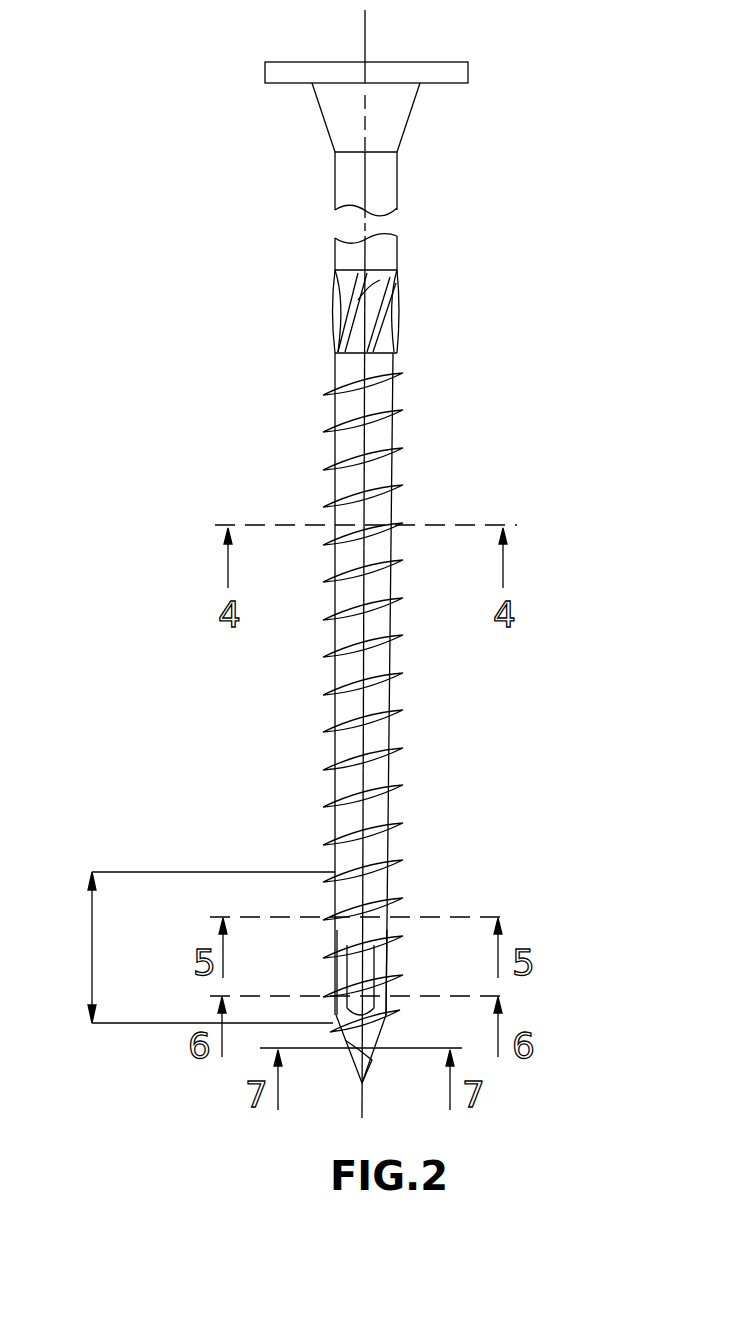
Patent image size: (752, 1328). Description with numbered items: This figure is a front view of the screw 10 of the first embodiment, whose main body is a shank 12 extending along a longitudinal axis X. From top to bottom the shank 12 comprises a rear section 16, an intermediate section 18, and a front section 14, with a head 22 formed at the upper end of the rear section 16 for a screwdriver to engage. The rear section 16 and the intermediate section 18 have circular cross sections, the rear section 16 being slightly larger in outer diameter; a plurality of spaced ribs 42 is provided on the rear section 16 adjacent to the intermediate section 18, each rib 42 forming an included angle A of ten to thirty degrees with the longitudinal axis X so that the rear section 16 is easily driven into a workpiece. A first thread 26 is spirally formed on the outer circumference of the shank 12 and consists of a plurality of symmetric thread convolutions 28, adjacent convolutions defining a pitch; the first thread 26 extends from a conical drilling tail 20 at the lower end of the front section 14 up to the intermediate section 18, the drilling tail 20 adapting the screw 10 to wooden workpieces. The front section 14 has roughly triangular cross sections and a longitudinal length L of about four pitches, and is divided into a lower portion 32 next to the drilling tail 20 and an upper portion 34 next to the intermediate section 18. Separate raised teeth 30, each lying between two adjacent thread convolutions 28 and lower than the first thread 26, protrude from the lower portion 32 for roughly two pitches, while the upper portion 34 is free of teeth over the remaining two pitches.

The screw 10 is at (212, 696).
The shank 12 is at (345, 440).
The front section 14 is at (338, 940).
The rear section 16 is at (385, 192).
The intermediate section 18 is at (338, 752).
The drilling tail 20 is at (352, 1052).
The head 22 is at (468, 73).
The first thread 26 is at (398, 480).
The thread convolutions 28 is at (398, 405).
The raised teeth 30 is at (342, 975).
The lower portion 32 is at (368, 960).
The upper portion 34 is at (382, 884).
The ribs 42 is at (333, 314).
The included angle A is at (362, 300).
The longitudinal length L is at (92, 946).
The longitudinal axis X is at (367, 23).